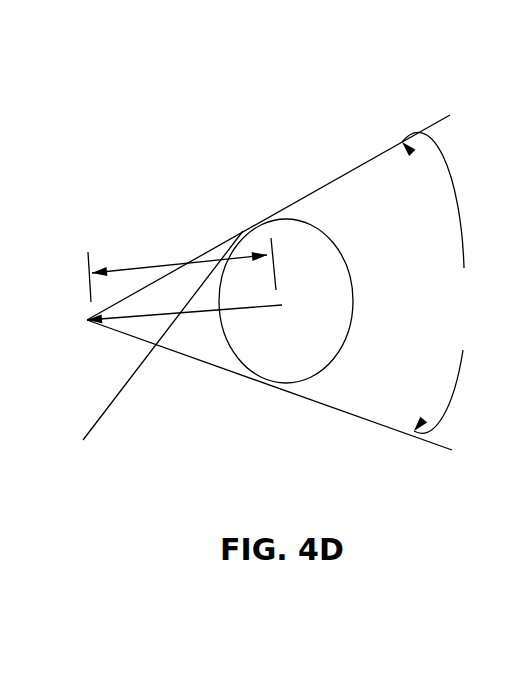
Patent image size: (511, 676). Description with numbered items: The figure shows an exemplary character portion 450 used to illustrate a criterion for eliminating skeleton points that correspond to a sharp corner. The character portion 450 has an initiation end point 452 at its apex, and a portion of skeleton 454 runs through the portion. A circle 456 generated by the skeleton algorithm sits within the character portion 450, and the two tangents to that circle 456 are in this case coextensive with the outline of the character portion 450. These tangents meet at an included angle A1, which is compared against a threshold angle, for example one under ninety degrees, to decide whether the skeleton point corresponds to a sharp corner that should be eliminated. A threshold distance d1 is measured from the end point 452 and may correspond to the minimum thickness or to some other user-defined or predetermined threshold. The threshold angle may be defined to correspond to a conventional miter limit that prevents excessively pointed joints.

The character portion 450 is at (252, 180).
The initiation end point 452 is at (85, 324).
The portion of skeleton 454 is at (151, 355).
The circle 456 is at (343, 255).
The threshold distance d1 is at (185, 263).
The included angle A1 is at (436, 282).